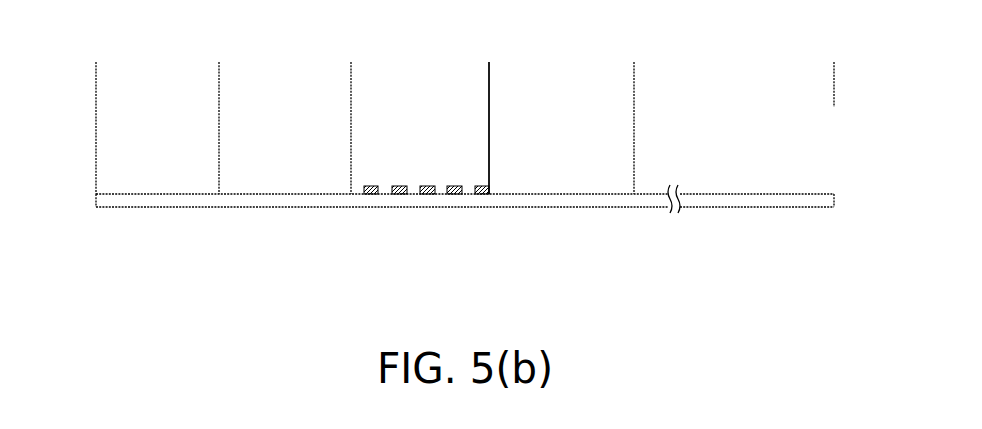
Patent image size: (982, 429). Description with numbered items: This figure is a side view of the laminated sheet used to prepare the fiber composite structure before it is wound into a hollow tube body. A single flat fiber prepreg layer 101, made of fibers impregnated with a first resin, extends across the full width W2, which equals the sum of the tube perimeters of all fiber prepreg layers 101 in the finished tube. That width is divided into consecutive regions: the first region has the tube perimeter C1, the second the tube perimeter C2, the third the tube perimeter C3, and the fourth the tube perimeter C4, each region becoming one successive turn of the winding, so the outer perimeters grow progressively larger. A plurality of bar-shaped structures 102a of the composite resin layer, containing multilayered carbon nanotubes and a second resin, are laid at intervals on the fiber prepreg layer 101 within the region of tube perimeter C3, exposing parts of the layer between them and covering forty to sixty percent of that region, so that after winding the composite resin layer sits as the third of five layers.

The fiber prepreg layer 101 is at (157, 199).
The bar-shaped structures 102a is at (372, 195).
The width of the fiber prepreg layer W2 is at (96, 89).
The tube perimeter of the first fiber prepreg layer C1 is at (96, 123).
The tube perimeter of the second fiber prepreg layer C2 is at (219, 123).
The tube perimeter of the third fiber prepreg layer C3 is at (351, 123).
The tube perimeter of the fourth fiber prepreg layer C4 is at (634, 123).